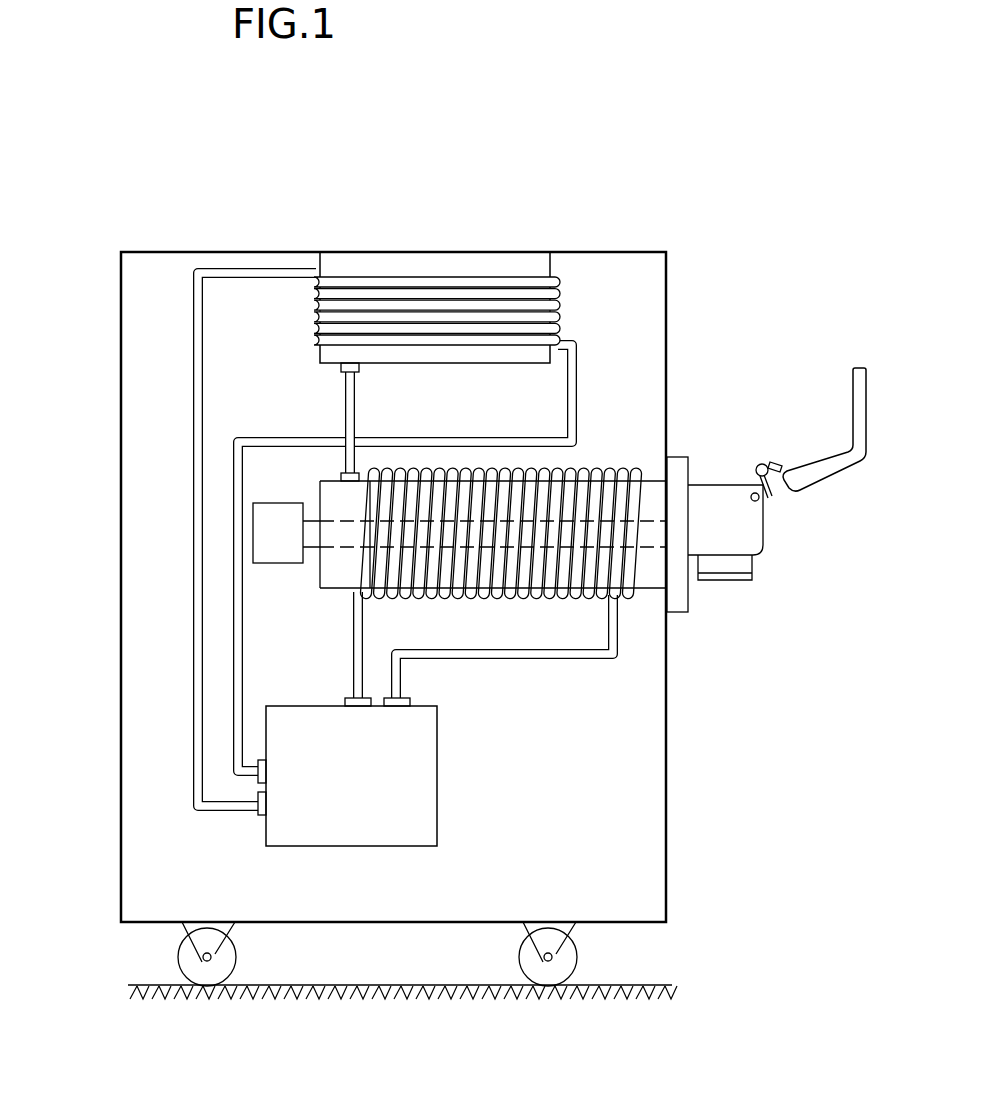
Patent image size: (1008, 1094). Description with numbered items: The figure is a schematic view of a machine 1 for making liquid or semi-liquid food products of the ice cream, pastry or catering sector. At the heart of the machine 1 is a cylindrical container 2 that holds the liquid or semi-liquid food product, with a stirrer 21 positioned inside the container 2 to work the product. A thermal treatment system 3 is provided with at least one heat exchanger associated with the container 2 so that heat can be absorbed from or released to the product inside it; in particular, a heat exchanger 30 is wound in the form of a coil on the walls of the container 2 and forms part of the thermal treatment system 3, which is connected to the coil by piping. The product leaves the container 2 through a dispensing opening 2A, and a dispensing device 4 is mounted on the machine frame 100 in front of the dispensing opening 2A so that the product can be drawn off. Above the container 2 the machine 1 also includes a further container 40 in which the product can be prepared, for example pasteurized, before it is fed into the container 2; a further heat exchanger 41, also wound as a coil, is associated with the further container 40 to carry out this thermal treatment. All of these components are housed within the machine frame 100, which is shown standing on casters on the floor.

The machine 1 is at (650, 192).
The machine frame 100 is at (663, 654).
The further container 40 is at (480, 248).
The further heat exchanger 41 is at (570, 282).
The stirrer 21 is at (344, 570).
The container 2 is at (645, 475).
The heat exchanger 30 is at (486, 604).
The dispensing opening 2A is at (667, 497).
The dispensing device 4 is at (784, 521).
The thermal treatment system 3 is at (344, 785).